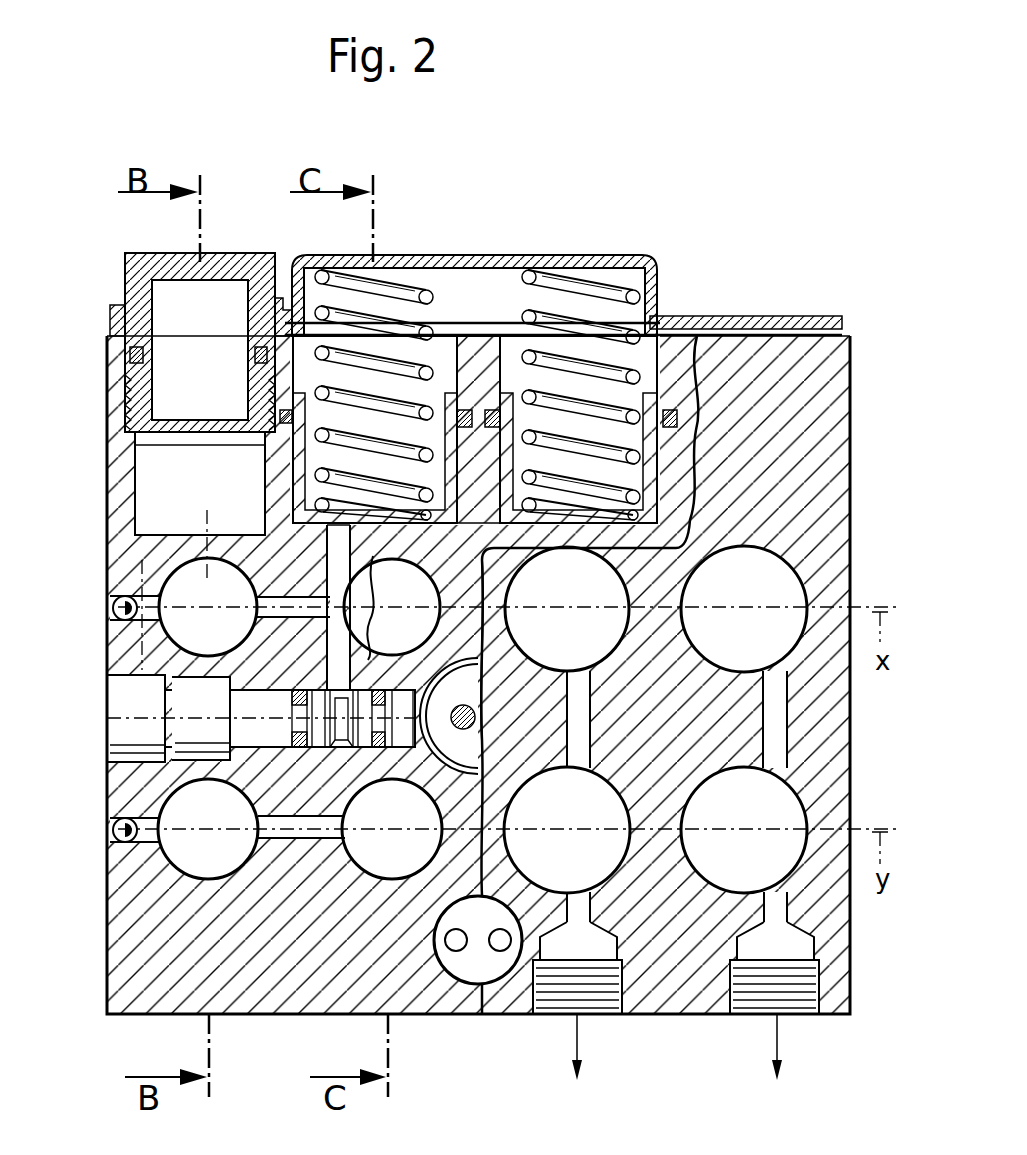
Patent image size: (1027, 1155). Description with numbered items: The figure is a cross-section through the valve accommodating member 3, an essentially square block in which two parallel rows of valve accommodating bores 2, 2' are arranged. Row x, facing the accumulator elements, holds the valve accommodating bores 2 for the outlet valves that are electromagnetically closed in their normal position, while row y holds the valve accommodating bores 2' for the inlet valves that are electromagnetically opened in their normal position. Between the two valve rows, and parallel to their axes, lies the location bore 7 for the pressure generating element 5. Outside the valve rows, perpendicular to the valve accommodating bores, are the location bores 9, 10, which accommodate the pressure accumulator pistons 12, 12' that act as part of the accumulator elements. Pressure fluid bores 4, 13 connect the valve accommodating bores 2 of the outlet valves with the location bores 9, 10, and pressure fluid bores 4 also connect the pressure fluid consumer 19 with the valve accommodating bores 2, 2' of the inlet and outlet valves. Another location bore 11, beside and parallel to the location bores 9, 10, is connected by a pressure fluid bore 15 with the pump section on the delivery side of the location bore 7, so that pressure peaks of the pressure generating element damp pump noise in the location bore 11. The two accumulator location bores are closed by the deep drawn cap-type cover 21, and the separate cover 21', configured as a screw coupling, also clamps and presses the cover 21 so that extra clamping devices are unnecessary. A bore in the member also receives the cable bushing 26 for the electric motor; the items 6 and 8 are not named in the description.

The valve accommodating bore 2 is at (483, 609).
The valve accommodating bore 2' is at (482, 830).
The valve accommodating member 3 is at (808, 438).
The pressure fluid bore 4 is at (784, 730).
The pressure generating element 5 is at (280, 735).
The recess 6 is at (467, 758).
The location bore 7 is at (333, 750).
The partition 8 is at (508, 622).
The location bore 9 is at (652, 370).
The location bore 10 is at (470, 340).
The location bore 11 is at (150, 492).
The pressure accumulator piston 12 is at (571, 357).
The pressure accumulator piston 12' is at (382, 357).
The pressure fluid bore 13 is at (332, 567).
The pressure fluid bore 15 is at (146, 645).
The pressure fluid consumer 19 is at (783, 1028).
The cap-type cover 21 is at (563, 309).
The separate cover 21' is at (201, 312).
The cable bushing 26 is at (487, 967).